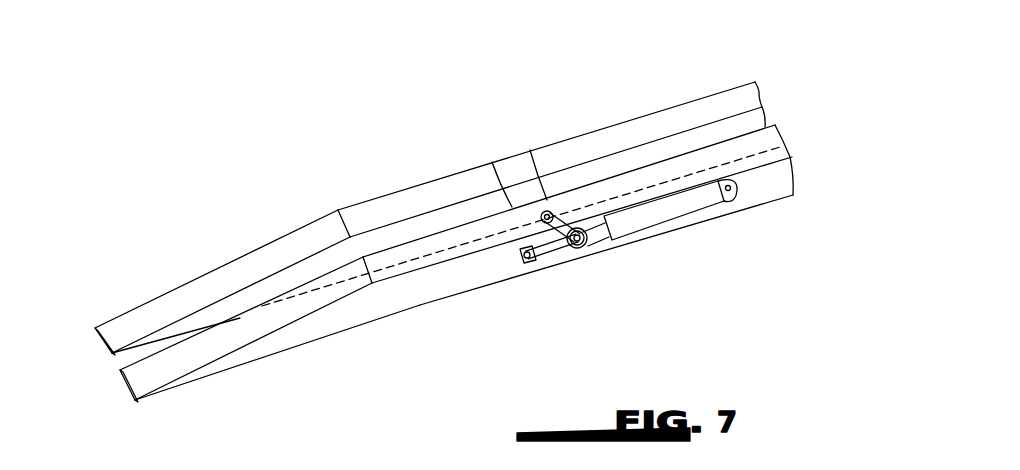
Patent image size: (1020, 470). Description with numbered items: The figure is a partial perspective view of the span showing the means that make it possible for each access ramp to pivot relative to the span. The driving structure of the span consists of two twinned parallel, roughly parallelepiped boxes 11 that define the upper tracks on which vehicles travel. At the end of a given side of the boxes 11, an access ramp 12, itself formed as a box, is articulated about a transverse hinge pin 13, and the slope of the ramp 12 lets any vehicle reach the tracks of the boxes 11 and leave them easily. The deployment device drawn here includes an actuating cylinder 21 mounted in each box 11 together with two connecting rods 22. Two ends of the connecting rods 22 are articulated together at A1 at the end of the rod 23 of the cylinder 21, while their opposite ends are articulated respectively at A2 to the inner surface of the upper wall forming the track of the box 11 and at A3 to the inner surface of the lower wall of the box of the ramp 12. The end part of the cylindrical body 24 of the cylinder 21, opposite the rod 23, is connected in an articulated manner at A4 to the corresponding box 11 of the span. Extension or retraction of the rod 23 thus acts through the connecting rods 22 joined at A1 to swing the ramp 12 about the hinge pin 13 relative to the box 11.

The box 11 is at (527, 157).
The access ramp 12 is at (257, 277).
The transverse hinge pin 13 is at (477, 233).
The actuating cylinder 21 is at (695, 251).
The connecting rod 22 is at (557, 288).
The rod 23 is at (635, 277).
The cylindrical body 24 is at (764, 220).
The articulation point A1 is at (610, 302).
The articulation point A2 is at (520, 146).
The articulation point A3 is at (514, 310).
The articulation point A4 is at (799, 125).